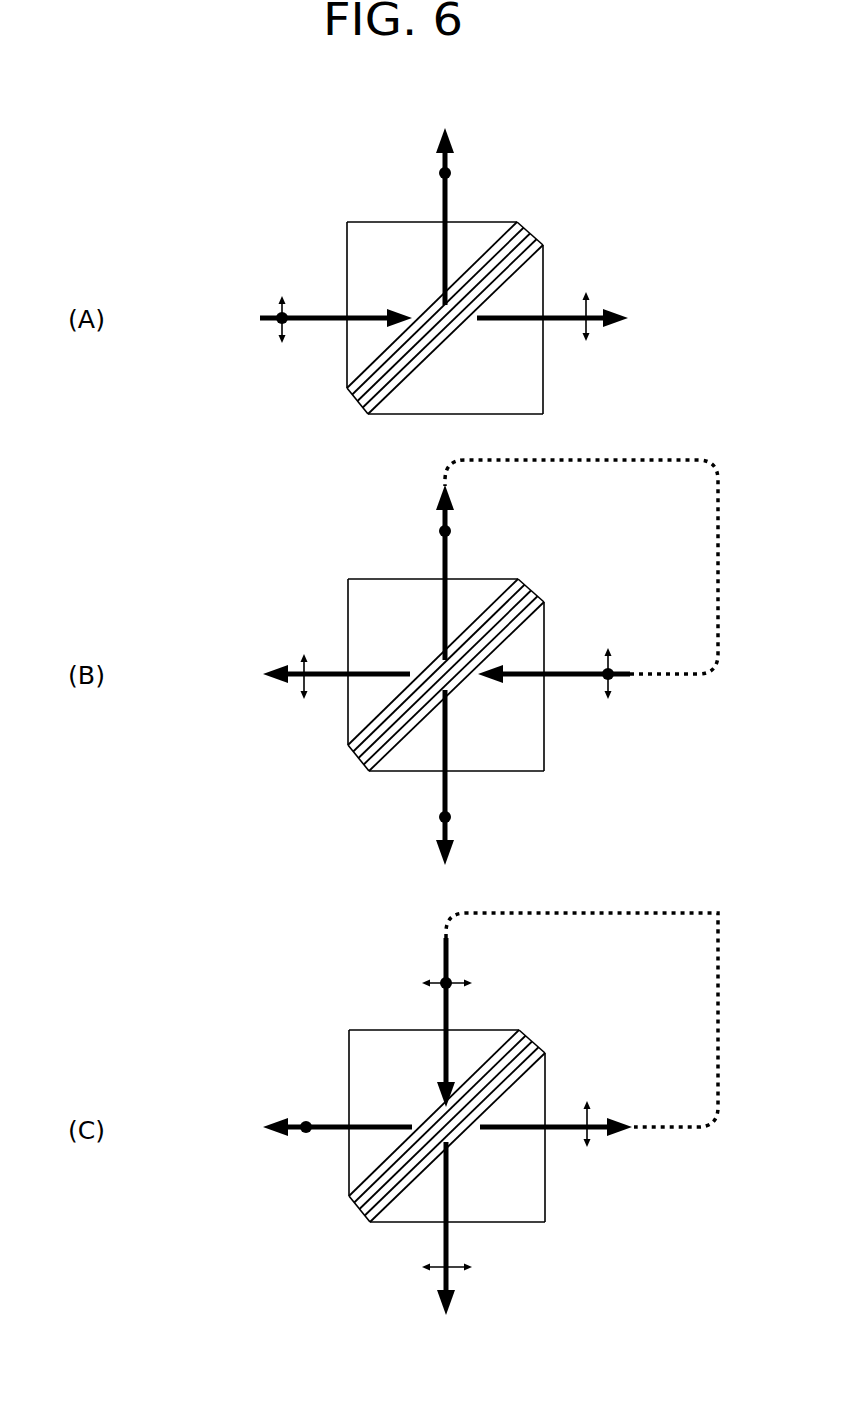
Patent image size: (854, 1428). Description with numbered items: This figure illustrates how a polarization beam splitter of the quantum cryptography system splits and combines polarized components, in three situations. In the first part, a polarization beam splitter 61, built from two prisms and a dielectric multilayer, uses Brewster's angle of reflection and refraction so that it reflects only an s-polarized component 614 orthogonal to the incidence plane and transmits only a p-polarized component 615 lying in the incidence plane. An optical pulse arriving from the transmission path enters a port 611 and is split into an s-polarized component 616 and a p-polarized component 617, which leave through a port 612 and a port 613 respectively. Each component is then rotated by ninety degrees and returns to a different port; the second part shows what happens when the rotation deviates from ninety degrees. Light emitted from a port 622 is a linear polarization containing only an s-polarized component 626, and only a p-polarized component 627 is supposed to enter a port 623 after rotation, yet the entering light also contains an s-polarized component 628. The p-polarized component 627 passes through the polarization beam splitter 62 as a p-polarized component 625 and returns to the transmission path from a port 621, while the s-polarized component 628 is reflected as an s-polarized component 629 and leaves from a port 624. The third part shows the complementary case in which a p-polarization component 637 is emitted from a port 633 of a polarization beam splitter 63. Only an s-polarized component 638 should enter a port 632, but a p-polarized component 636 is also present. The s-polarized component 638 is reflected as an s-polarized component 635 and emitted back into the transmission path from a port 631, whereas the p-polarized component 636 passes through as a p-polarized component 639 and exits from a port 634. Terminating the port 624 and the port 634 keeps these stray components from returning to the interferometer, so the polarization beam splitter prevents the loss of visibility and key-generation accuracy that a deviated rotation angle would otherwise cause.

The polarization beam splitter 61 is at (428, 287).
The port 611 is at (345, 320).
The port 612 is at (445, 222).
The port 613 is at (543, 313).
The s-polarized component 614 is at (278, 323).
The p-polarized component 615 is at (280, 302).
The s-polarized component 616 is at (440, 172).
The p-polarized component 617 is at (587, 339).
The polarization beam splitter 62 is at (426, 676).
The port 621 is at (343, 681).
The port 622 is at (447, 578).
The port 623 is at (545, 672).
The port 624 is at (441, 771).
The p-polarized component 625 is at (303, 657).
The s-polarized component 626 is at (438, 530).
The p-polarized component 627 is at (609, 650).
The s-polarized component 628 is at (615, 684).
The s-polarized component 629 is at (450, 818).
The polarization beam splitter 63 is at (429, 1126).
The port 631 is at (347, 1132).
The port 632 is at (447, 1030).
The port 633 is at (545, 1125).
The port 634 is at (439, 1223).
The s-polarized component 635 is at (302, 1124).
The p-polarized component 636 is at (439, 982).
The p-polarization component 637 is at (588, 1146).
The s-polarized component 638 is at (442, 980).
The p-polarized component 639 is at (470, 1266).